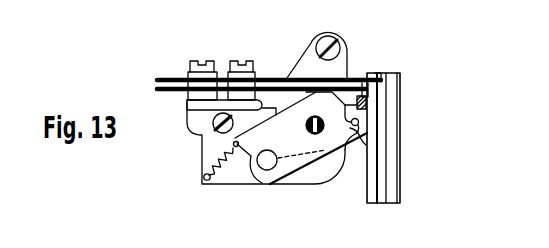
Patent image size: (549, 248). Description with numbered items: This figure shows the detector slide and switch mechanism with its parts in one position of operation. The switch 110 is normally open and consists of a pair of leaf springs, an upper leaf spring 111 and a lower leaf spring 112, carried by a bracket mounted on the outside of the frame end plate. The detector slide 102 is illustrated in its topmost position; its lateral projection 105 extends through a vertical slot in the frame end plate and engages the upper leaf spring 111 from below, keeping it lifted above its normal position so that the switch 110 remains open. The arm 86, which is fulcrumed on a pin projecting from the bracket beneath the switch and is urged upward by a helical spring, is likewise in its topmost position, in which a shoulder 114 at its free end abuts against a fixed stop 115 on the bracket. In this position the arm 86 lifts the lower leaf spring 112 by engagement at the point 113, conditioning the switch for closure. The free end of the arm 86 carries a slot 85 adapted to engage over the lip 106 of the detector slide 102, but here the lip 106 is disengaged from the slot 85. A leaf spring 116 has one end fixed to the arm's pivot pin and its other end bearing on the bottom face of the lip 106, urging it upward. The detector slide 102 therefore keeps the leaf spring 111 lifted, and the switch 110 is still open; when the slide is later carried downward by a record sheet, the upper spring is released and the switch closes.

The slot 85 is at (355, 128).
The arm 86 is at (275, 184).
The detector slide 102 is at (400, 197).
The lateral projection 105 is at (402, 81).
The lip 106 is at (360, 126).
The switch 110 is at (375, 74).
The upper leaf spring 111 is at (167, 77).
The lower leaf spring 112 is at (264, 77).
The point 113 is at (312, 77).
The shoulder 114 is at (385, 128).
The fixed stop 115 is at (366, 106).
The leaf spring 116 is at (366, 133).